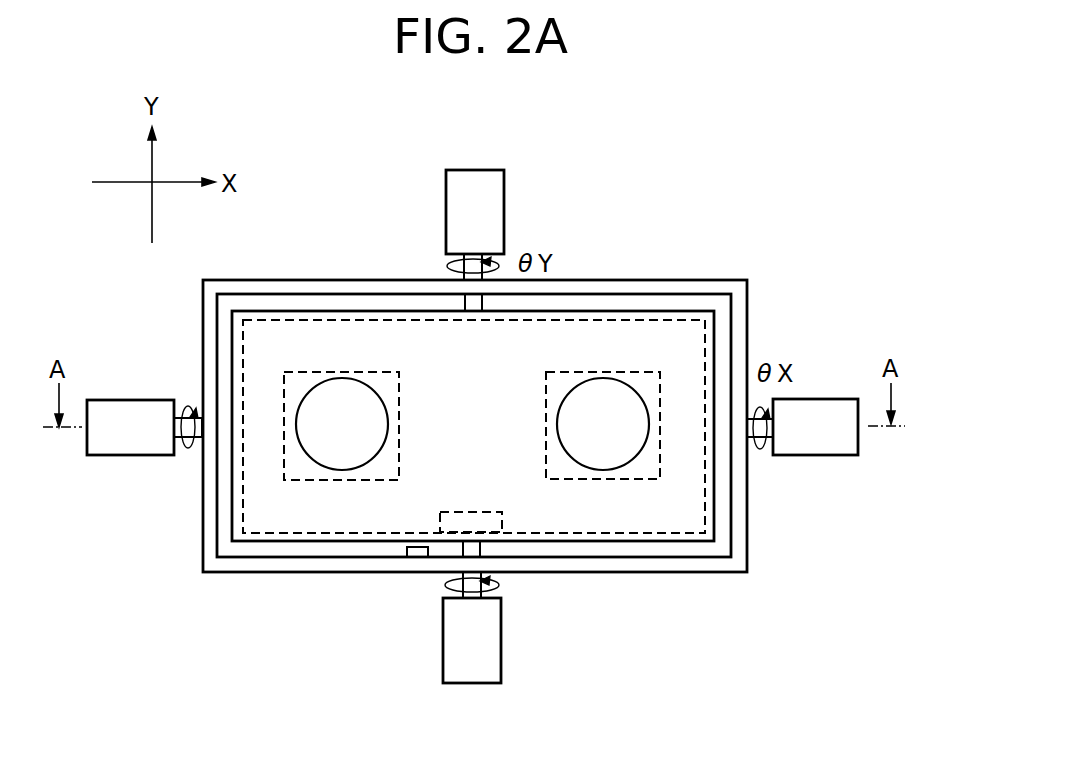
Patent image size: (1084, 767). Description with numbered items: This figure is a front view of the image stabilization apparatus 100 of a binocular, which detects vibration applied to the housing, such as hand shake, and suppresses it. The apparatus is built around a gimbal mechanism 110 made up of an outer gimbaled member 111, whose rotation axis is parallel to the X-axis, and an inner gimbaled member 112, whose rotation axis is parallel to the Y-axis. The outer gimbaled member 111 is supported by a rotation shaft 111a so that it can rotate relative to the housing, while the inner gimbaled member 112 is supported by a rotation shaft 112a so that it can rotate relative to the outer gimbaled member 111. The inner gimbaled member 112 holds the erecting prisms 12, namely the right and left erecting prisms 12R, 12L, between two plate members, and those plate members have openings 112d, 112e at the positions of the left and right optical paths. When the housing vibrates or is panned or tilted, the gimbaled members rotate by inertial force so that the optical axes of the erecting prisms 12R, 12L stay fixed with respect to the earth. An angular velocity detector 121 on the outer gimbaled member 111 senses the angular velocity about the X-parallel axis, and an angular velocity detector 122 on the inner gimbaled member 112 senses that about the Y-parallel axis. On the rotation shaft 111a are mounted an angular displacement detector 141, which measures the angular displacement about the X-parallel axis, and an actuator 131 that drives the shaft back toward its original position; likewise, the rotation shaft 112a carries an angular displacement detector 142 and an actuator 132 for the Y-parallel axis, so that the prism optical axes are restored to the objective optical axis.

The image stabilization apparatus 100 is at (619, 237).
The gimbal mechanism 110 is at (778, 197).
The outer gimbaled member 111 is at (748, 285).
The rotation shaft 111a is at (178, 417).
The inner gimbaled member 112 is at (684, 310).
The rotation shaft 112a is at (467, 304).
The opening 112d is at (603, 458).
The opening 112e is at (338, 458).
The erecting prisms 12 is at (517, 365).
The erecting prism 12R is at (389, 416).
The erecting prism 12L is at (556, 416).
The angular velocity detector 121 is at (418, 552).
The angular velocity detector 122 is at (472, 516).
The actuator 131 is at (116, 457).
The actuator 132 is at (443, 655).
The angular displacement detector 141 is at (843, 456).
The angular displacement detector 142 is at (505, 177).